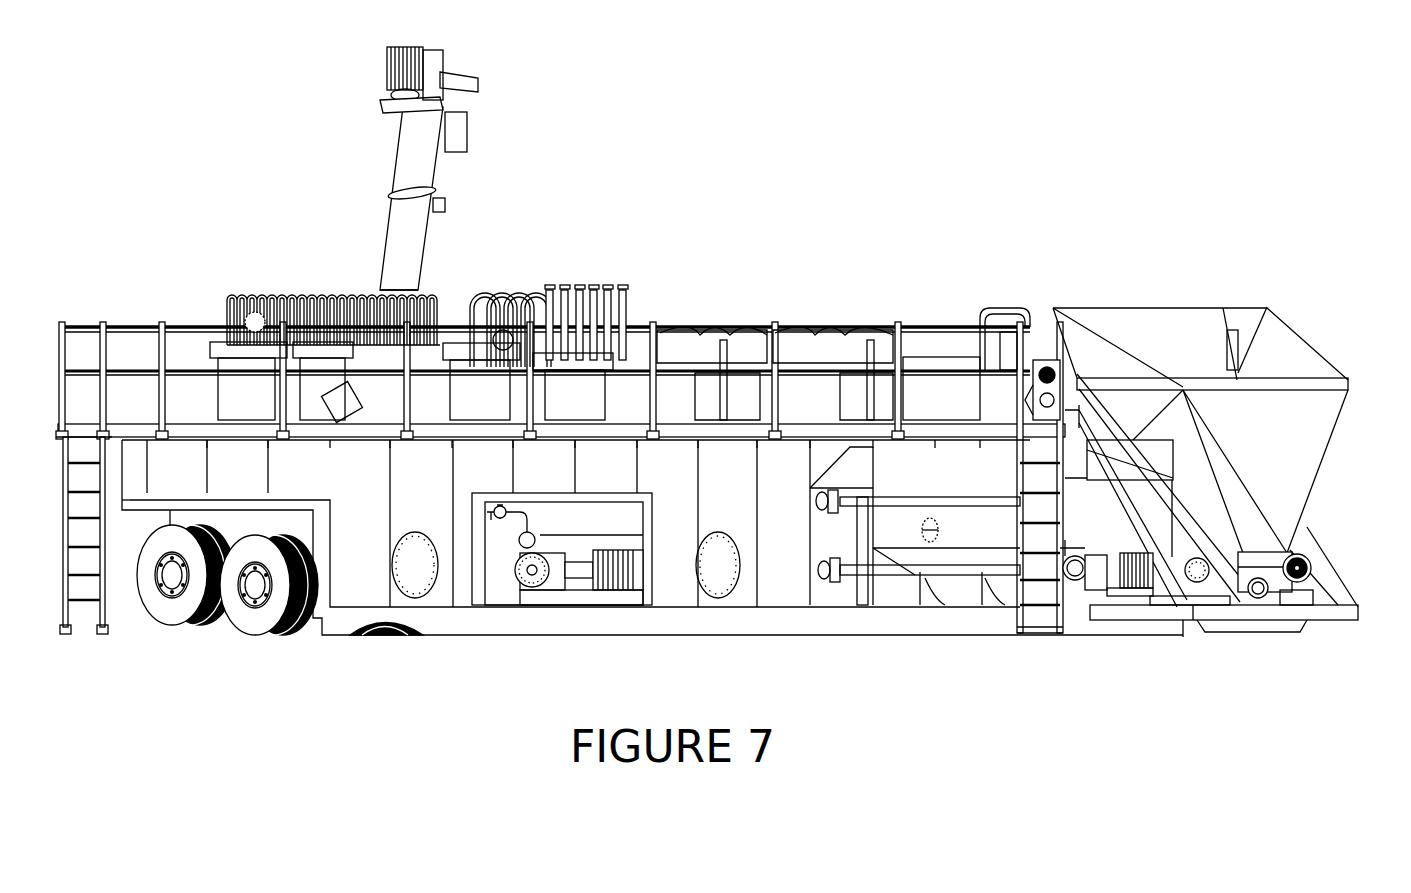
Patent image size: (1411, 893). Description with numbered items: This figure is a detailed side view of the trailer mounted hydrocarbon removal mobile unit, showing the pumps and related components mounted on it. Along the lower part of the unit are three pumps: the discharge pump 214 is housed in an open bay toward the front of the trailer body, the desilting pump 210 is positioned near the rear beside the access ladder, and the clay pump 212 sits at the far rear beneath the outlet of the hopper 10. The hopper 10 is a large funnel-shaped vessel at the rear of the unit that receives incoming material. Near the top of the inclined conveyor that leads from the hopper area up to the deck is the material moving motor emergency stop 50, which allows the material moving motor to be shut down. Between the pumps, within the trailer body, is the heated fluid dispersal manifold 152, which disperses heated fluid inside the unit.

The hopper 10 is at (1302, 443).
The material moving motor emergency stop 50 is at (1041, 367).
The heated fluid dispersal manifold 152 is at (922, 530).
The desilting pump 210 is at (1107, 580).
The clay pump 212 is at (1290, 553).
The discharge pump 214 is at (575, 580).